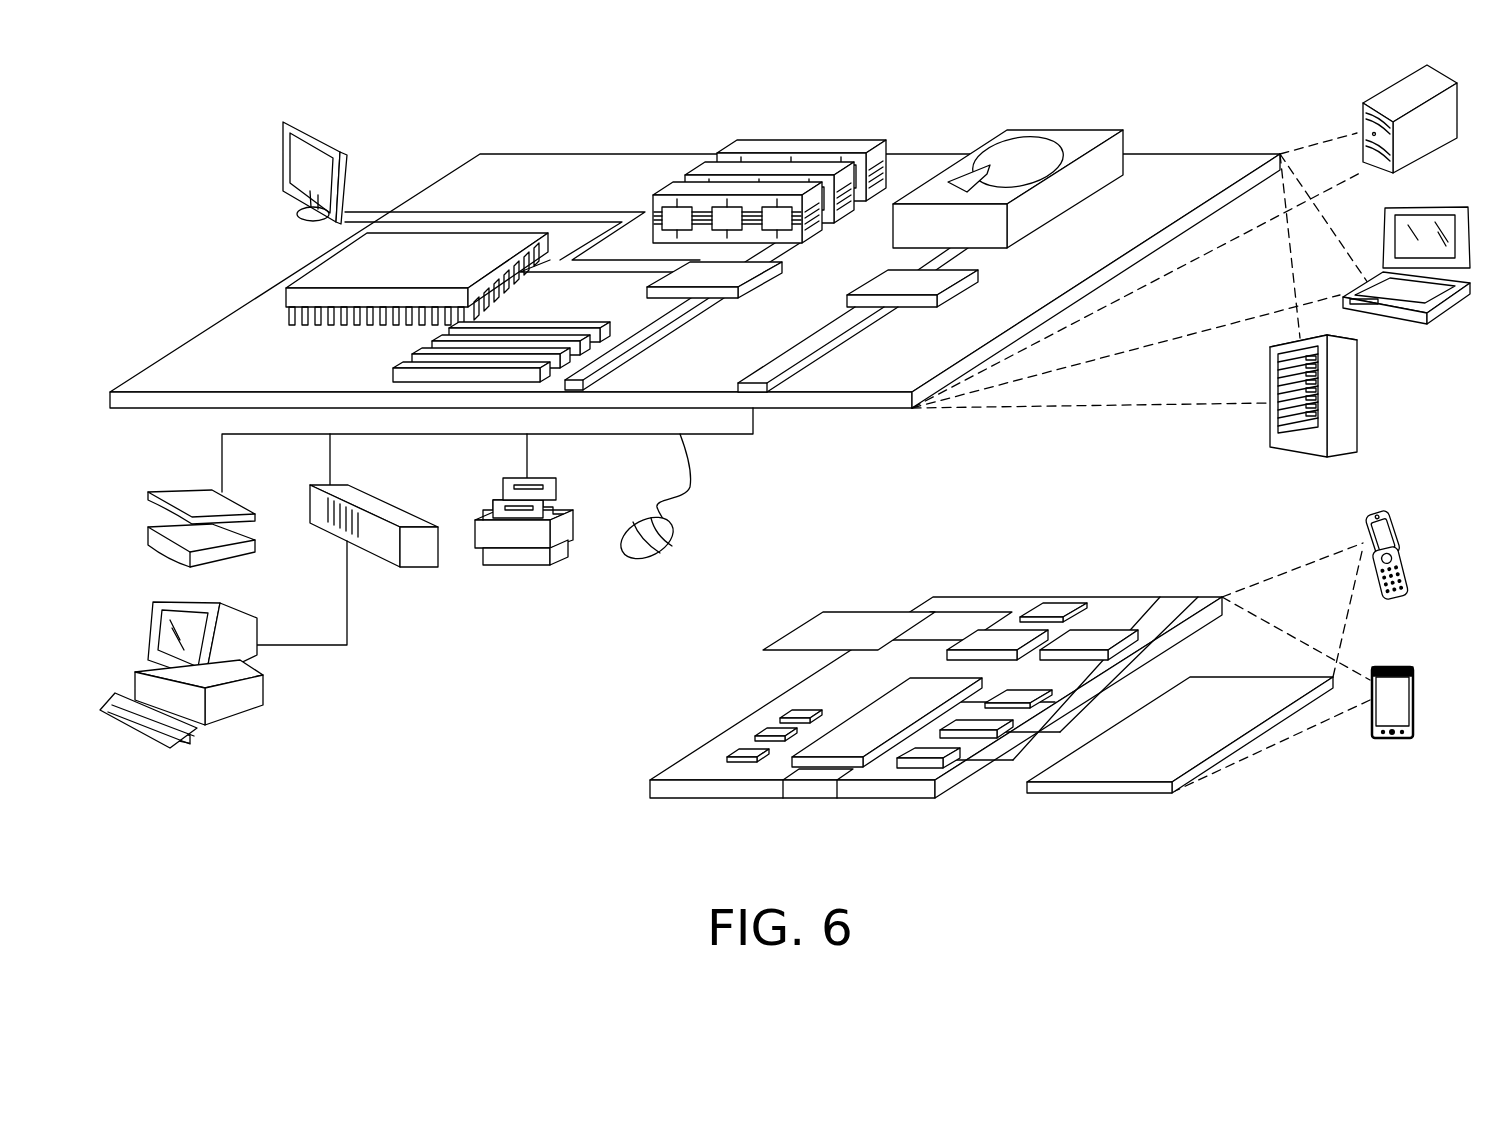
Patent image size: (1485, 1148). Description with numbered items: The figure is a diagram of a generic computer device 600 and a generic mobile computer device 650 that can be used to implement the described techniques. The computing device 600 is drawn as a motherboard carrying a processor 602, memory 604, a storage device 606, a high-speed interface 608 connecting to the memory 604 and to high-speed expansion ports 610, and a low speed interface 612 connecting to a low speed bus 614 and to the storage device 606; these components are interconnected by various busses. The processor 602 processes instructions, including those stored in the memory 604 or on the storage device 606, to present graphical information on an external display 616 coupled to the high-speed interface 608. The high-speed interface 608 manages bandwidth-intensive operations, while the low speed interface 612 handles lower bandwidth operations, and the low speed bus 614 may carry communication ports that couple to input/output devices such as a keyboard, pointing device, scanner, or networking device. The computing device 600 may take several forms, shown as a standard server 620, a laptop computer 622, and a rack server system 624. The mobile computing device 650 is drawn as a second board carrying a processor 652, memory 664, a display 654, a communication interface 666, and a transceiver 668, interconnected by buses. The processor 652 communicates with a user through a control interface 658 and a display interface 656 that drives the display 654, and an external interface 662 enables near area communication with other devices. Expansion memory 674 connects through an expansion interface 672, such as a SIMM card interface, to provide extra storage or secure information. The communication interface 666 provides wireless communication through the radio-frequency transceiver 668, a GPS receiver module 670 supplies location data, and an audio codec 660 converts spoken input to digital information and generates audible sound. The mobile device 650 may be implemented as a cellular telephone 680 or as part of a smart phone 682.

The generic computer device 600 is at (424, 94).
The processor 602 is at (313, 267).
The memory 604 is at (800, 147).
The storage device 606 is at (1053, 128).
The high-speed interface 608 is at (727, 272).
The high-speed expansion ports 610 is at (422, 355).
The low speed interface 612 is at (883, 278).
The low speed bus 614 is at (758, 378).
The display 616 is at (290, 122).
The standard server 620 is at (1385, 97).
The laptop computer 622 is at (1445, 207).
The rack server system 624 is at (1360, 397).
The generic mobile computer device 650 is at (598, 808).
The processor 652 is at (853, 728).
The display 654 is at (1220, 693).
The display interface 656 is at (935, 753).
The control interface 658 is at (980, 725).
The audio codec 660 is at (1022, 695).
The external interface 662 is at (810, 787).
The memory 664 is at (757, 735).
The communication interface 666 is at (997, 632).
The transceiver 668 is at (1100, 632).
The GPS receiver module 670 is at (1053, 605).
The expansion interface 672 is at (913, 612).
The expansion memory 674 is at (825, 612).
The cellular telephone 680 is at (1382, 513).
The smart phone 682 is at (1383, 665).